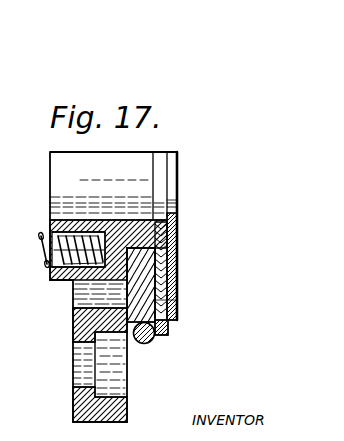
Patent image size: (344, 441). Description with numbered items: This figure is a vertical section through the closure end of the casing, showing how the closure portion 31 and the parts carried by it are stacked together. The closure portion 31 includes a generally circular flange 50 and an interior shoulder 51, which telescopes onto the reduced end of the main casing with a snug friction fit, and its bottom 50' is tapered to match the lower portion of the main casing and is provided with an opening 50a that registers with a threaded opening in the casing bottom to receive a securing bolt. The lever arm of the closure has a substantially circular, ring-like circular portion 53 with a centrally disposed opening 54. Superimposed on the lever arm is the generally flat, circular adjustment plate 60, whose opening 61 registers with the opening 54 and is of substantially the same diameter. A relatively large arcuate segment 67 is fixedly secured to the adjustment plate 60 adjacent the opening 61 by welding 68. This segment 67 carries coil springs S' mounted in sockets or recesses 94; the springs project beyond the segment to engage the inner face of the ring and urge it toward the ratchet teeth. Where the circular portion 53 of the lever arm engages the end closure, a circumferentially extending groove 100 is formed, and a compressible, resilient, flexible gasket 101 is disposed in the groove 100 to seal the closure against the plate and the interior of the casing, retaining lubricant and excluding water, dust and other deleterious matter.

The segment 67 is at (50, 223).
The coil springs S' is at (58, 249).
The sockets or recesses 94 is at (98, 232).
The welding 68 is at (172, 205).
The centrally disposed opening 54 is at (180, 236).
The opening 61 is at (169, 259).
The adjustment plate 60 is at (147, 302).
The interior shoulder 51 is at (175, 300).
The circumferentially extending groove 100 is at (178, 321).
The circular portion 53 is at (169, 332).
The gasket 101 is at (143, 344).
The circular flange 50 is at (79, 335).
The closure portion 31 is at (66, 325).
The opening 50a is at (78, 351).
The bottom 50' is at (78, 404).